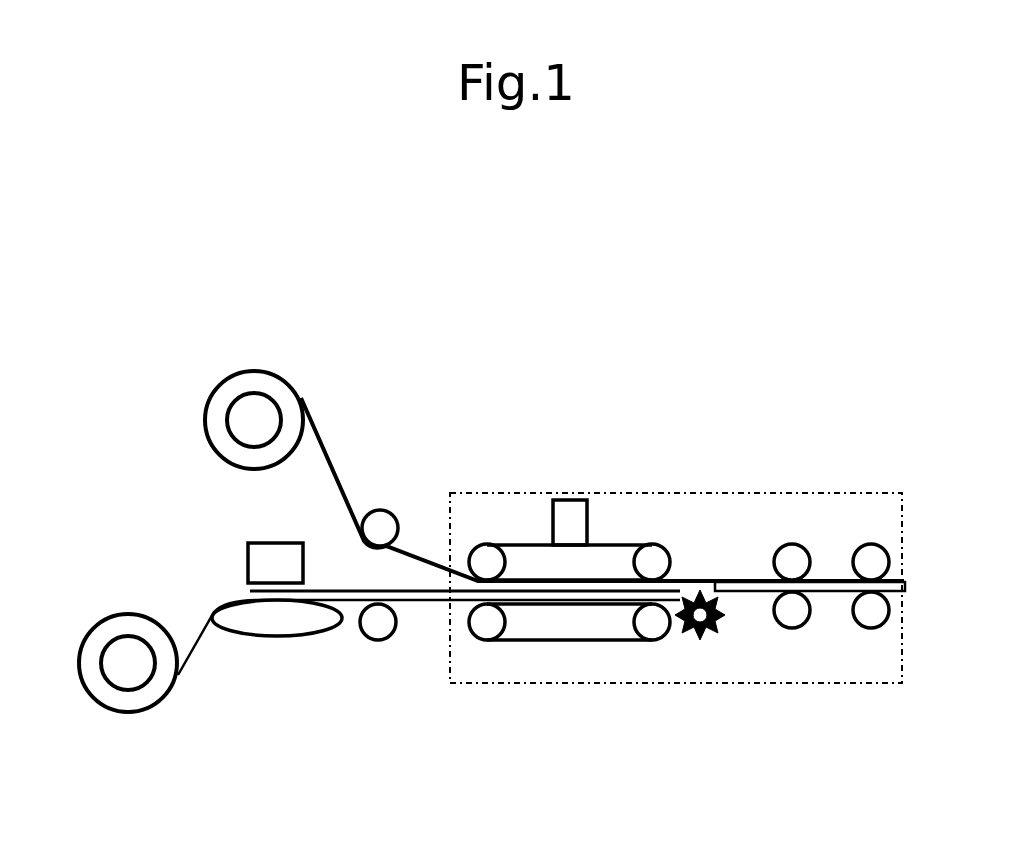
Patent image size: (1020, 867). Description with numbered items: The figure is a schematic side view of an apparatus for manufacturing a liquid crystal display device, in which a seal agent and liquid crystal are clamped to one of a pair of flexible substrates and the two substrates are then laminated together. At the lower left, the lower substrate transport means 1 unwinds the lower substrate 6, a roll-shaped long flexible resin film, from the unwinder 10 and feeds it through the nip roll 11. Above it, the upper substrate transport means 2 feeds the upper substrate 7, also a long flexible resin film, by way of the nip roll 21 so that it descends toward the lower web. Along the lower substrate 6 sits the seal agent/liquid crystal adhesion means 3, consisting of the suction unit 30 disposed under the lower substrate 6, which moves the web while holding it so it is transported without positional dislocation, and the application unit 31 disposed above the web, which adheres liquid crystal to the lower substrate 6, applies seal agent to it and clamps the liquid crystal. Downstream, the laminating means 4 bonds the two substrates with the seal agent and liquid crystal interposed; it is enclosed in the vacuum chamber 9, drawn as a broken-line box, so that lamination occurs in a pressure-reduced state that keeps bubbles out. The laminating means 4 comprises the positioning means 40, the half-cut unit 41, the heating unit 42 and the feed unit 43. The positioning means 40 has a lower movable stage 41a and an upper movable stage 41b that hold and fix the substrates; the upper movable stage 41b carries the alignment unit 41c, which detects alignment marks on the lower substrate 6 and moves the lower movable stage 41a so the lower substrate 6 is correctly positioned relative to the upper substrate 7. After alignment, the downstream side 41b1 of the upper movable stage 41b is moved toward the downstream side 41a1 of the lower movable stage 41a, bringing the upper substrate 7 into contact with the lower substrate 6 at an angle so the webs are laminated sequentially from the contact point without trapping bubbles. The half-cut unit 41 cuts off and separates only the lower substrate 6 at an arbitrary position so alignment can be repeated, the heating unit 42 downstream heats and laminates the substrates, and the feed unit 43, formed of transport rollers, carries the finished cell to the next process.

The lower substrate transport means 1 is at (192, 704).
The upper substrate transport means 2 is at (250, 359).
The seal agent/liquid crystal adhesion means 3 is at (219, 582).
The laminating means 4 is at (686, 744).
The lower substrate 6 is at (201, 648).
The upper substrate 7 is at (331, 458).
The vacuum chamber 9 is at (603, 690).
The unwinder 10 is at (113, 713).
The nip roll 11 is at (380, 624).
The nip roll 21 is at (381, 527).
The suction unit 30 is at (278, 620).
The application unit 31 is at (276, 544).
The positioning means 40 is at (483, 660).
The half-cut unit 41 is at (703, 640).
The lower movable stage 41a is at (528, 641).
The downstream side of the lower movable stage 41a1 is at (652, 626).
The upper movable stage 41b is at (523, 545).
The downstream side of the upper movable stage 41b1 is at (658, 548).
The alignment unit 41c is at (572, 515).
The heating unit 42 is at (791, 638).
The feed unit 43 is at (871, 638).